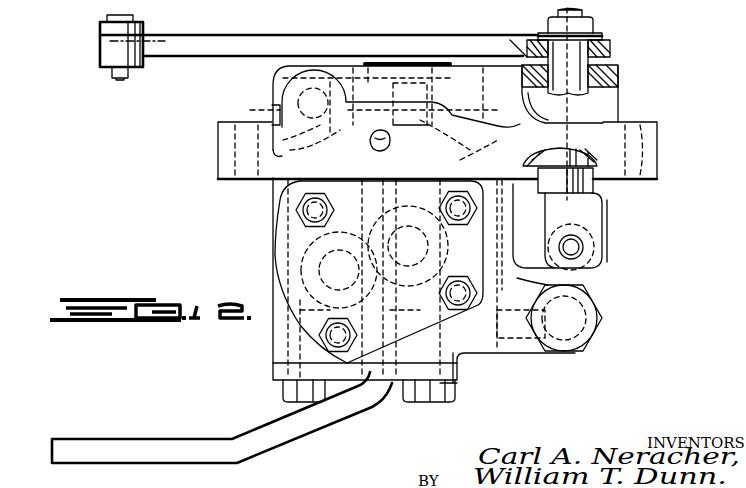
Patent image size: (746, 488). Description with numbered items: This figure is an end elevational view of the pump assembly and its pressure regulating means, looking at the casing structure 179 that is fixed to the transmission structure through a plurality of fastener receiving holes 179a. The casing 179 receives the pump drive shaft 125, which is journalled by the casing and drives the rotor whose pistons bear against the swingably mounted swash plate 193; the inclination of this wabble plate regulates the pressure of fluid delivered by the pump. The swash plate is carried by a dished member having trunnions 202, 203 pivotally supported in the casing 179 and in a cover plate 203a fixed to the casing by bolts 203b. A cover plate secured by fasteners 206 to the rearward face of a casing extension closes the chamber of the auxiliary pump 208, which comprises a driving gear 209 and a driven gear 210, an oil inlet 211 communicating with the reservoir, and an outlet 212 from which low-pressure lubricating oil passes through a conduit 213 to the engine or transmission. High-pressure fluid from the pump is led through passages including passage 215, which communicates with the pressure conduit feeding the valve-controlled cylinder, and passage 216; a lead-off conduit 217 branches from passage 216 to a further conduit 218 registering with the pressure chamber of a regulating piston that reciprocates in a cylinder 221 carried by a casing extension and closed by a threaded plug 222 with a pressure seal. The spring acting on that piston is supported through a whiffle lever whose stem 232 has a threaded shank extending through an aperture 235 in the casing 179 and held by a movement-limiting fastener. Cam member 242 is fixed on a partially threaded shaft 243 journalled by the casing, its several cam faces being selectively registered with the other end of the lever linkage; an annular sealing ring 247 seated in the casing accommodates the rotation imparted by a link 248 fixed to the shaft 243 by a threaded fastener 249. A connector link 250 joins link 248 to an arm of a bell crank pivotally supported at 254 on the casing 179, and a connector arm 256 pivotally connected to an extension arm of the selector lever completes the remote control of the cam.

The pump drive shaft 125 is at (325, 242).
The casing structure 179 is at (207, 165).
The fastener receiving holes 179a is at (222, 129).
The swash plate 193 is at (470, 356).
The trunnion 202 is at (424, 78).
The trunnion 203 is at (398, 392).
The cover plate 203a is at (462, 382).
The bolts 203b is at (280, 390).
The fasteners 206 is at (297, 210).
The auxiliary pump 208 is at (292, 238).
The driving gear 209 is at (391, 265).
The driven gear 210 is at (300, 276).
The oil inlet 211 is at (276, 450).
The outlet 212 is at (382, 205).
The conduit 213 is at (386, 152).
The passage 215 is at (263, 108).
The passage 216 is at (355, 58).
The lead-off conduit 217 is at (425, 128).
The conduit 218 is at (478, 342).
The cylinder 221 is at (573, 352).
The threaded plug 222 is at (586, 302).
The stem 232 is at (126, 18).
The aperture 235 is at (582, 248).
The cam member 242 is at (589, 196).
The partially threaded shaft 243 is at (590, 106).
The annular sealing ring 247 is at (609, 80).
The link 248 is at (602, 38).
The threaded fastener 249 is at (580, 16).
The connector link 250 is at (172, 42).
The bell crank pivot 254 is at (434, 1).
The connector arm 256 is at (482, 10).